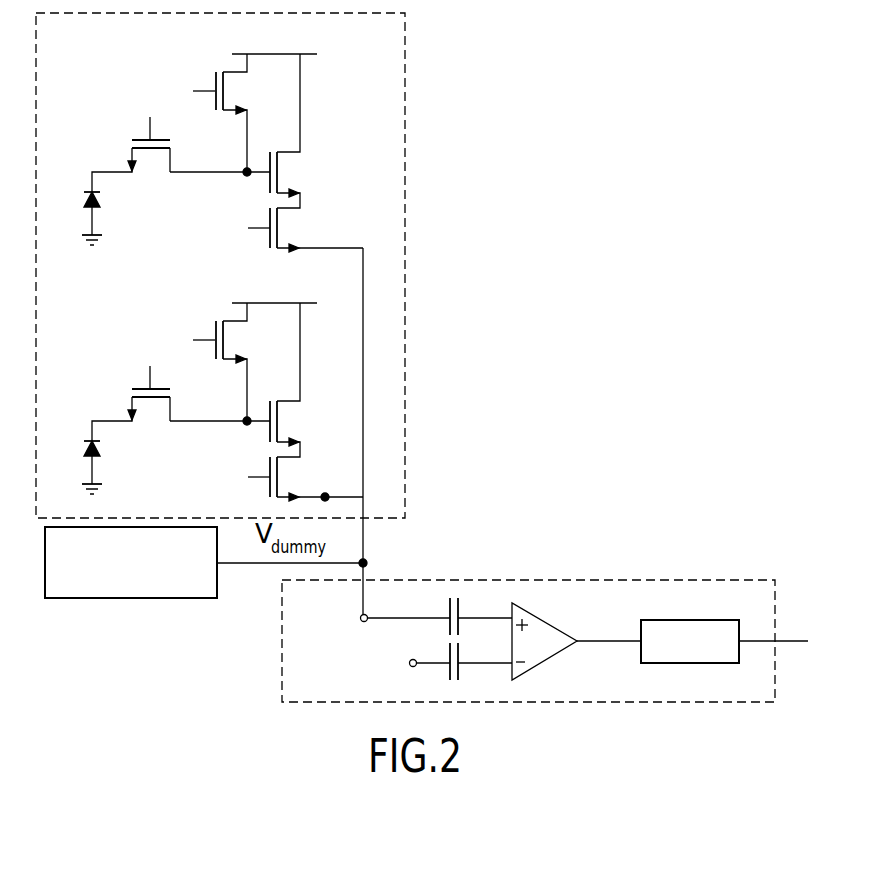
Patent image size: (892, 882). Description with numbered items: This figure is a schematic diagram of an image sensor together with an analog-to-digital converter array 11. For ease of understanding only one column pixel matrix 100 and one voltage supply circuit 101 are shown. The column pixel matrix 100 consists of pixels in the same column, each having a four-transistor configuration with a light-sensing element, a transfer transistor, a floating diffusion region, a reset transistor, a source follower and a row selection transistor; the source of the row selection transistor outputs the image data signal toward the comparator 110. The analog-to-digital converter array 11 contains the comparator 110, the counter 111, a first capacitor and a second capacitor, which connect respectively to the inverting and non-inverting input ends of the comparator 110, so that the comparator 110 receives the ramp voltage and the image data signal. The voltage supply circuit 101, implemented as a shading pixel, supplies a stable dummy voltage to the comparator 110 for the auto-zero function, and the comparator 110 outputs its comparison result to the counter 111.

The column pixel matrix 100 is at (405, 318).
The voltage supply circuit 101 is at (130, 598).
The analog-to-digital converter array 11 is at (620, 580).
The comparator 110 is at (530, 603).
The counter 111 is at (693, 620).